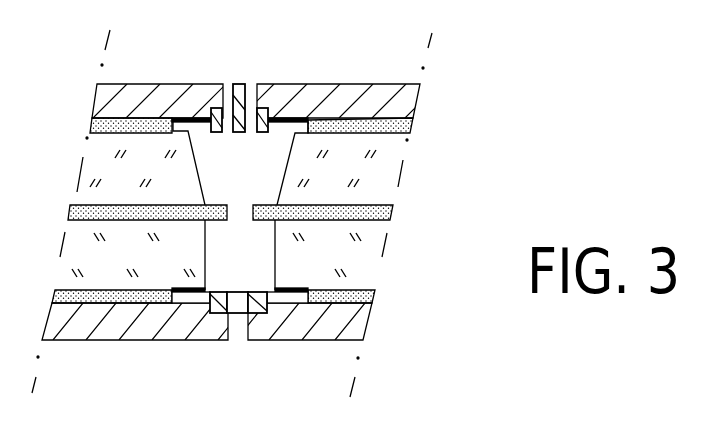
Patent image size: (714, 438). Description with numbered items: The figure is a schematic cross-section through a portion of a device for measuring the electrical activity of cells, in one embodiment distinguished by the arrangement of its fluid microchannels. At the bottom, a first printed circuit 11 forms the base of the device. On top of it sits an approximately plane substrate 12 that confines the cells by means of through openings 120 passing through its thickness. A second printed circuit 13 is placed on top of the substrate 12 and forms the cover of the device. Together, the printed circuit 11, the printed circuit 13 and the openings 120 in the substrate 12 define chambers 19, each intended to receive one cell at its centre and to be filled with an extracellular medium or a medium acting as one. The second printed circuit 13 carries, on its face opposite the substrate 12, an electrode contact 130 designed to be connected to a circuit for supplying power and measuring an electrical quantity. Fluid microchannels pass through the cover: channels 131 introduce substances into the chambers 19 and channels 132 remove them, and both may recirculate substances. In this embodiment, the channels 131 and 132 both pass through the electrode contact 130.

The first printed circuit 11 is at (72, 327).
The substrate 12 is at (422, 137).
The second printed circuit 13 is at (372, 97).
The chambers 19 is at (282, 167).
The through openings 120 is at (198, 152).
The electrode contact 130 is at (239, 133).
The channels 131 is at (222, 108).
The channels 132 is at (255, 88).